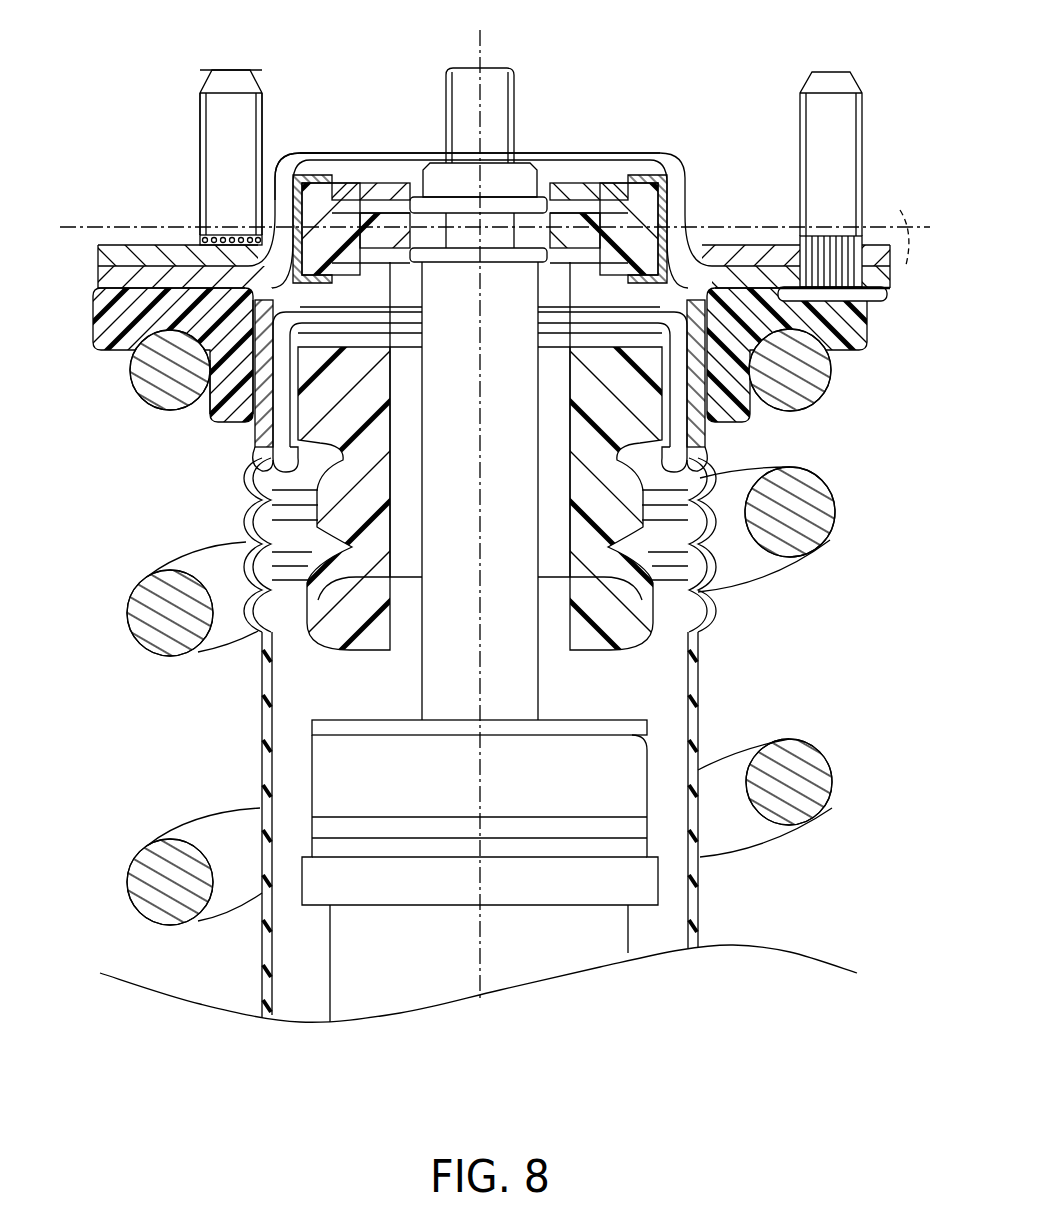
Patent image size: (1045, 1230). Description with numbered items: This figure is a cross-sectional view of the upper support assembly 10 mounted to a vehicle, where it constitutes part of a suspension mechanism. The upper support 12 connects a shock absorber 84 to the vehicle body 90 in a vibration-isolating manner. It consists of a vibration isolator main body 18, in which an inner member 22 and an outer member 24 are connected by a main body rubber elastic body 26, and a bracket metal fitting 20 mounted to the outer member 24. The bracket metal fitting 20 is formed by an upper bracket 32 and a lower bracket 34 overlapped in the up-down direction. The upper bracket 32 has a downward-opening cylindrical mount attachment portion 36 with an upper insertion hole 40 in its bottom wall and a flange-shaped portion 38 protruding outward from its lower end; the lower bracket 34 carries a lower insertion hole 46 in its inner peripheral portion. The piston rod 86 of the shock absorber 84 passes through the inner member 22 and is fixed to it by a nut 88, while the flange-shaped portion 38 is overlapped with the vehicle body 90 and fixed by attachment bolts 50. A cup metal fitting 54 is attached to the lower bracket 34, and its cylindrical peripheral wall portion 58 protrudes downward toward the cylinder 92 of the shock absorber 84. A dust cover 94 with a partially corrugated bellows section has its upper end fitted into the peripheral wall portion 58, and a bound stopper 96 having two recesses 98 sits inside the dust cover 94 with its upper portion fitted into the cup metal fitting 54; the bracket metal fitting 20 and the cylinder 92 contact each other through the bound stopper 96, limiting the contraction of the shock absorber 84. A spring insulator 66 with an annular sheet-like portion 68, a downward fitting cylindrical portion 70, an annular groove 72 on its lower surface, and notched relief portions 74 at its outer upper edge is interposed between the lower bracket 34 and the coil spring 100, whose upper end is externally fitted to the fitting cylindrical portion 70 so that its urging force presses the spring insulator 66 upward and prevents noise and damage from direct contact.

The upper support assembly 10 is at (670, 92).
The upper support 12 is at (692, 148).
The vibration isolator main body 18 is at (392, 183).
The bracket metal fitting 20 is at (132, 124).
The inner member 22 is at (580, 232).
The outer member 24 is at (656, 206).
The main body rubber elastic body 26 is at (656, 242).
The upper bracket 32 is at (266, 178).
The lower bracket 34 is at (222, 246).
The mount attachment portion 36 is at (316, 166).
The flange-shaped portion 38 is at (122, 244).
The upper insertion hole 40 is at (567, 162).
The lower insertion hole 46 is at (560, 325).
The attachment bolts 50 is at (228, 122).
The cup metal fitting 54 is at (708, 438).
The peripheral wall portion 58 is at (266, 432).
The spring insulator 66 is at (875, 332).
The sheet-like portion 68 is at (166, 310).
The fitting cylindrical portion 70 is at (234, 410).
The annular groove 72 is at (148, 358).
The notched relief portions 74 is at (842, 297).
The shock absorber 84 is at (322, 968).
The piston rod 86 is at (495, 98).
The nut 88 is at (466, 178).
The vehicle body 90 is at (876, 215).
The cylinder 92 is at (546, 953).
The dust cover 94 is at (268, 690).
The bound stopper 96 is at (612, 612).
The recesses 98 is at (700, 460).
The coil spring 100 is at (792, 772).